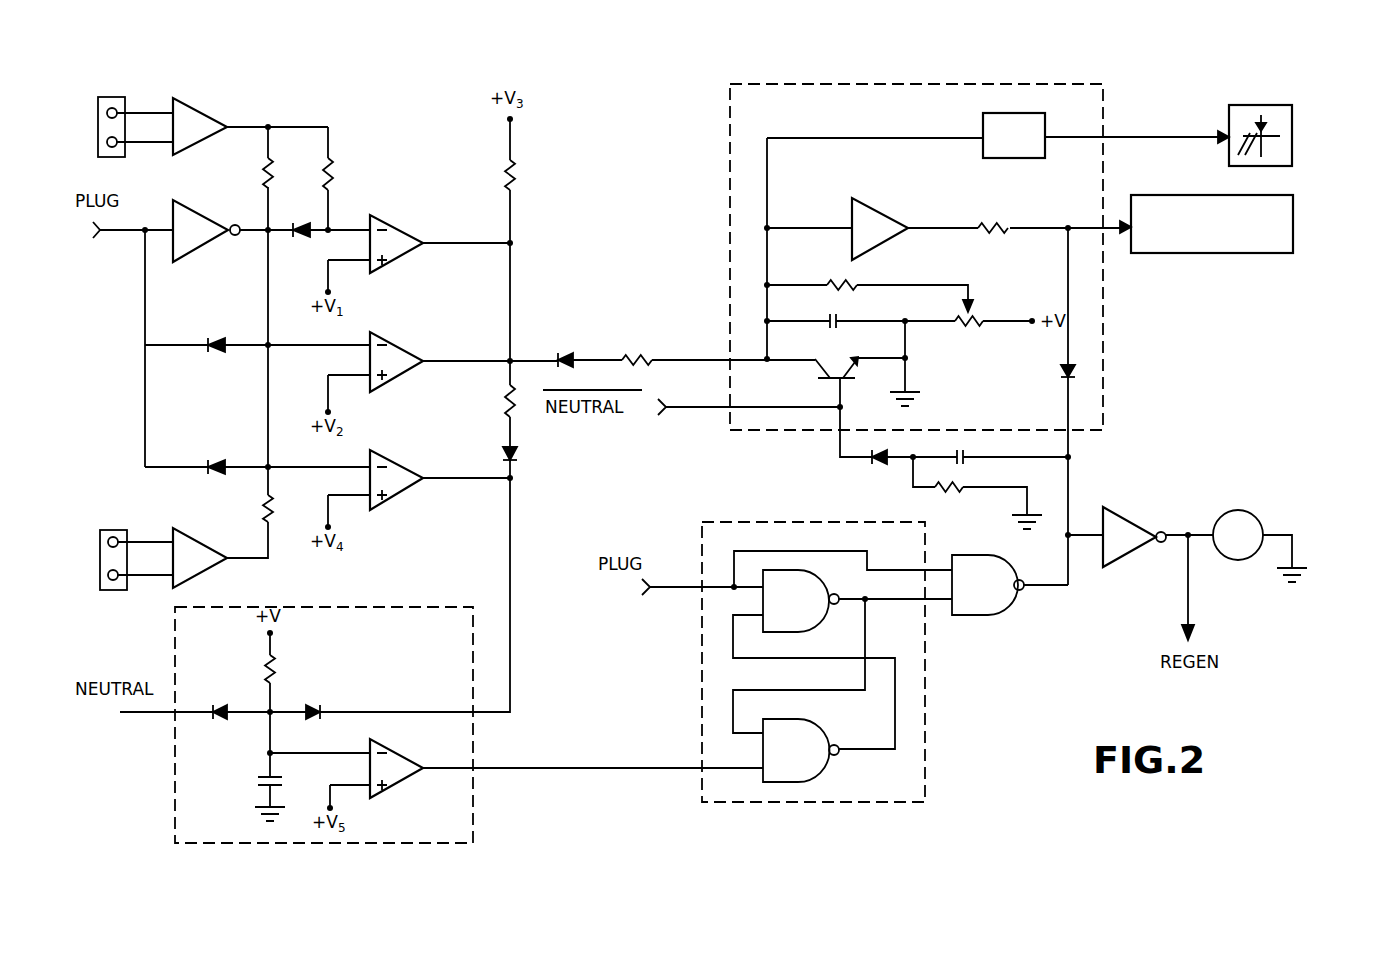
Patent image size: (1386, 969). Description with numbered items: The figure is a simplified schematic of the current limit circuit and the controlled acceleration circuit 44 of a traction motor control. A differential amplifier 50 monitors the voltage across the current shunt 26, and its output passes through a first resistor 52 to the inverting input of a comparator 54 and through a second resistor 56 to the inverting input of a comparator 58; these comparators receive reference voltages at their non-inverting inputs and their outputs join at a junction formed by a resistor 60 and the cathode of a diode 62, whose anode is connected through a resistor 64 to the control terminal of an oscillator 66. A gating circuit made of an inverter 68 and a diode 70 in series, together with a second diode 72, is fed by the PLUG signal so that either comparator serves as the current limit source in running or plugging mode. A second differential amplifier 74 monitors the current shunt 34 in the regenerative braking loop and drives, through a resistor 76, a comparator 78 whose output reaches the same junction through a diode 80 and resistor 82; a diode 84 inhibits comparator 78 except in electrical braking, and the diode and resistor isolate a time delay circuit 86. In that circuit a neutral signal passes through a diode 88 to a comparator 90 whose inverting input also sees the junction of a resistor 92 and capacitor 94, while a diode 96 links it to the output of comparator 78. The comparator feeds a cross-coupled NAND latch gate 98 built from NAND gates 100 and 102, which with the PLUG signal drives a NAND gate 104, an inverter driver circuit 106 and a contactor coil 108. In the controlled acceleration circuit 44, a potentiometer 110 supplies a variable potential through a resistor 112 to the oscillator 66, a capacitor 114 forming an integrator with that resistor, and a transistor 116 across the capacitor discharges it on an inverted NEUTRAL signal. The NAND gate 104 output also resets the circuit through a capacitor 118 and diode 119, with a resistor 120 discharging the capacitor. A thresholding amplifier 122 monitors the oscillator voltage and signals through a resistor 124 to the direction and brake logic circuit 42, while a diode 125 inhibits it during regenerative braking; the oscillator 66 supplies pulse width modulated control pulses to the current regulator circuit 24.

The current regulator circuit 24 is at (1270, 118).
The current shunt 26 is at (135, 115).
The current shunt 34 is at (136, 540).
The direction and brake logic circuit 42 is at (1212, 246).
The controlled acceleration circuit 44 is at (888, 257).
The differential amplifier 50 is at (209, 117).
The first resistor 52 is at (354, 169).
The comparator 54 is at (396, 230).
The second resistor 56 is at (244, 173).
The comparator 58 is at (401, 348).
The resistor 60 is at (535, 172).
The diode 62 is at (568, 337).
The resistor 64 is at (637, 335).
The oscillator 66 is at (991, 128).
The inverter 68 is at (206, 242).
The diode 70 is at (296, 247).
The second diode 72 is at (216, 329).
The second differential amplifier 74 is at (200, 544).
The resistor 76 is at (249, 502).
The comparator 78 is at (396, 469).
The diode 80 is at (483, 446).
The resistor 82 is at (482, 401).
The diode 84 is at (216, 450).
The time delay circuit 86 is at (324, 702).
The diode 88 is at (215, 692).
The comparator 90 is at (399, 759).
The resistor 92 is at (292, 664).
The capacitor 94 is at (245, 778).
The diode 96 is at (328, 692).
The cross-coupled NAND latch gate 98 is at (837, 662).
The first NAND gate 100 is at (804, 614).
The second NAND gate 102 is at (809, 741).
The NAND gate 104 is at (996, 597).
The inverter driver circuit 106 is at (1134, 523).
The contactor coil 108 is at (1238, 513).
The potentiometer 110 is at (961, 341).
The resistor 112 is at (819, 267).
The capacitor 114 is at (807, 310).
The transistor 116 is at (844, 355).
The capacitor 118 is at (993, 448).
The diode 119 is at (851, 473).
The resistor 120 is at (955, 506).
The thresholding amplifier 122 is at (880, 215).
The resistor 124 is at (989, 203).
The diode 125 is at (1035, 377).